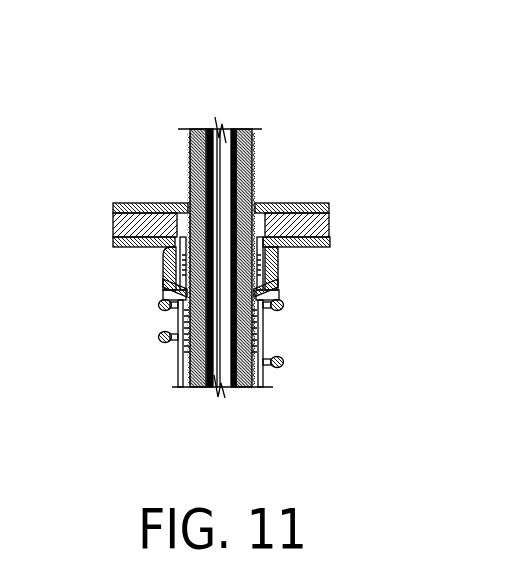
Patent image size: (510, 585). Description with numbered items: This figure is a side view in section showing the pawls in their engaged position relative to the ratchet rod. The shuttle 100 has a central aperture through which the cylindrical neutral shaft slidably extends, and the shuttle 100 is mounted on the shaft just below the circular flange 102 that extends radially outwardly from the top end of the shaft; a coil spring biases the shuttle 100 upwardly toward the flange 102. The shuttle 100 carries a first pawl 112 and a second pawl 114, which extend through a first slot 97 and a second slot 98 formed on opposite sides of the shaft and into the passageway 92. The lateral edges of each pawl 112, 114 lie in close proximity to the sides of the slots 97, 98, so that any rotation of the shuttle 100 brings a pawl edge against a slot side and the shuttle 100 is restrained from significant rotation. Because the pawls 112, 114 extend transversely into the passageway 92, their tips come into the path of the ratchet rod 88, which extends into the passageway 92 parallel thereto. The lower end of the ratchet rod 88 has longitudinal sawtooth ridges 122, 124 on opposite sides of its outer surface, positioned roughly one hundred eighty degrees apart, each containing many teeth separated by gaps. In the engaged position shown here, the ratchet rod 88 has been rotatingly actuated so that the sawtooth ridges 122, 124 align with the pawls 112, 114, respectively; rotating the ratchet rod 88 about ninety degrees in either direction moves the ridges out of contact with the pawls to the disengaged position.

The sawtooth ridge 124 is at (190, 152).
The sawtooth ridge 122 is at (250, 160).
The ratchet rod 88 is at (250, 183).
The circular flange 102 is at (330, 205).
The shuttle 100 is at (330, 240).
The first pawl 112 is at (280, 285).
The second pawl 114 is at (163, 285).
The second slot 98 is at (178, 370).
The first slot 97 is at (265, 345).
The passageway 92 is at (265, 387).